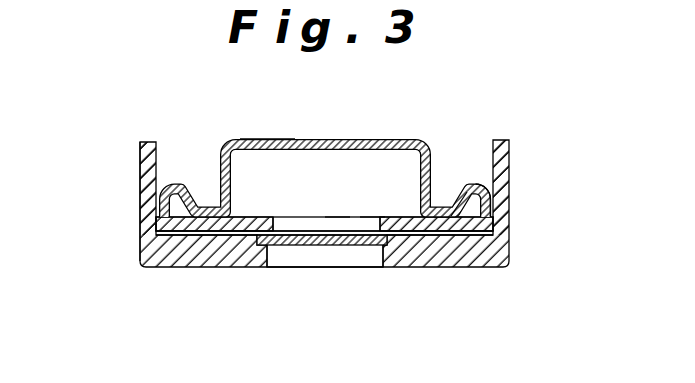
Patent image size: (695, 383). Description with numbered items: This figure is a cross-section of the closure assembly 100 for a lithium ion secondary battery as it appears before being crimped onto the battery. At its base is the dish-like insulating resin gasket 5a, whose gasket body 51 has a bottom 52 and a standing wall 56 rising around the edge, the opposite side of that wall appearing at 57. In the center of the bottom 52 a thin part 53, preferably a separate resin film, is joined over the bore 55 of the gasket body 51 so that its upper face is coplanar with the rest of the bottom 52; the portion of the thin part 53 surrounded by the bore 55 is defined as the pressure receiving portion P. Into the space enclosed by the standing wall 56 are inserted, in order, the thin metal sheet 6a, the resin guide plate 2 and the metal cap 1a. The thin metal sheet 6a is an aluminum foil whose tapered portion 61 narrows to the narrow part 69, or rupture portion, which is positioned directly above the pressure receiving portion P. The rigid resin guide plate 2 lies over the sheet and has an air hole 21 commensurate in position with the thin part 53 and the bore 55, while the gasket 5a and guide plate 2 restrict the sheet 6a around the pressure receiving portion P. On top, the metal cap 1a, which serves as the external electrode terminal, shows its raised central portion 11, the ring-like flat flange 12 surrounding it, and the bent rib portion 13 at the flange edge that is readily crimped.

The piezoelectric device assembly 100 is at (300, 212).
The metal cap 1a is at (390, 140).
The raised central portion 11 is at (268, 137).
The flange 12 is at (453, 200).
The rib portion 13 is at (480, 190).
The resin guide plate 2 is at (246, 214).
The air hole 21 is at (275, 228).
The narrow part 69 is at (337, 218).
The thin metal sheet 6a is at (373, 217).
The standing wall 56 is at (500, 178).
The left side wall of base 57 is at (147, 158).
The insulating resin gasket 5a is at (140, 213).
The bottom 52 is at (170, 258).
The tapered portion 61 is at (228, 233).
The thin part 53 is at (288, 268).
The pressure receiving portion P is at (317, 246).
The bore 55 is at (376, 256).
The gasket body 51 is at (452, 262).